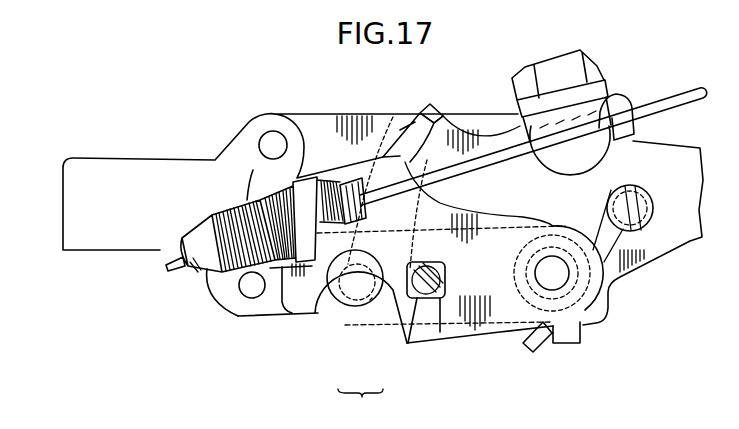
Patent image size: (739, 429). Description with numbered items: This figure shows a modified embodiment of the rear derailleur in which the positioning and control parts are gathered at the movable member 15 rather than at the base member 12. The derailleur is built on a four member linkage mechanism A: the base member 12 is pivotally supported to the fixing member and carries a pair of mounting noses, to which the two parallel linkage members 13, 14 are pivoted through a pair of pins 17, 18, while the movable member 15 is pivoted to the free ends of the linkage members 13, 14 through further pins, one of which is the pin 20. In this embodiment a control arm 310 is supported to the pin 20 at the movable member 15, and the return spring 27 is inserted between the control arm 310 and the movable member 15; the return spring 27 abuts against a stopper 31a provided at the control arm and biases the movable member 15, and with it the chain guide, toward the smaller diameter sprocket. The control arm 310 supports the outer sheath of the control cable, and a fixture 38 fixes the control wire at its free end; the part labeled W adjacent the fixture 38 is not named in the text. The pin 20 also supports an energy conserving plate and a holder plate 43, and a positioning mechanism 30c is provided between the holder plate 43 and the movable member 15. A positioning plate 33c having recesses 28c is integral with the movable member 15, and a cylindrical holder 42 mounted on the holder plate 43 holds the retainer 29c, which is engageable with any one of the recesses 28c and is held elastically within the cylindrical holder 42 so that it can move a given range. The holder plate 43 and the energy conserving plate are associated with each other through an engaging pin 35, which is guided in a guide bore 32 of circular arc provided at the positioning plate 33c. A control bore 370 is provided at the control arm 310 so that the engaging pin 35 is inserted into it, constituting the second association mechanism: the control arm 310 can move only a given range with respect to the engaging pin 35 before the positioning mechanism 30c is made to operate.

The pin 17 is at (271, 131).
The linkage member 13 is at (333, 114).
The guide bore 32 is at (437, 228).
The positioning plate 33c is at (420, 107).
The linkage mechanism A is at (495, 97).
The fixture 38 is at (588, 83).
The clip W is at (590, 118).
The base member 12 is at (160, 250).
The pin 18 is at (245, 303).
The linkage member 14 is at (288, 303).
The cylindrical holder 42 is at (328, 295).
The holder plate 43 is at (332, 315).
The recesses 28c is at (347, 300).
The retainer 29c is at (370, 300).
The positioning mechanism 30c is at (360, 402).
The engaging pin 35 is at (417, 325).
The control bore 370 is at (438, 334).
The control arm 310 is at (463, 335).
The return spring 27 is at (523, 310).
The stopper 31a is at (568, 347).
The pin 20 is at (562, 282).
The movable member 15 is at (653, 263).